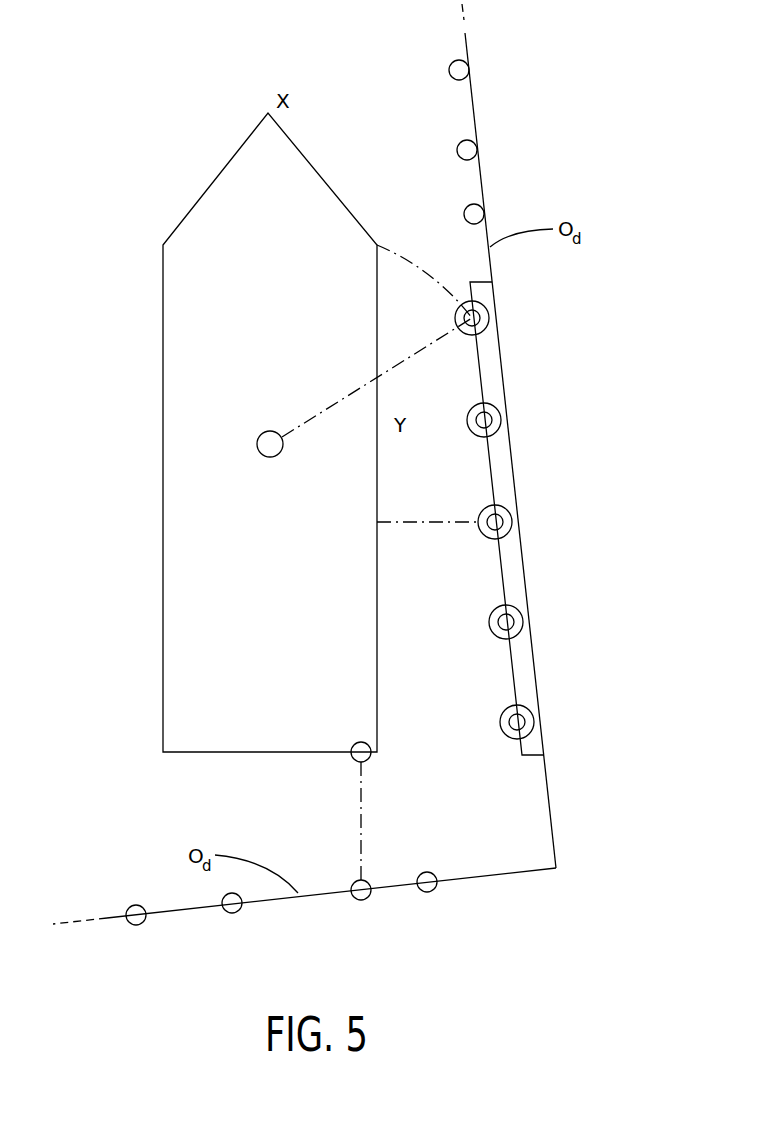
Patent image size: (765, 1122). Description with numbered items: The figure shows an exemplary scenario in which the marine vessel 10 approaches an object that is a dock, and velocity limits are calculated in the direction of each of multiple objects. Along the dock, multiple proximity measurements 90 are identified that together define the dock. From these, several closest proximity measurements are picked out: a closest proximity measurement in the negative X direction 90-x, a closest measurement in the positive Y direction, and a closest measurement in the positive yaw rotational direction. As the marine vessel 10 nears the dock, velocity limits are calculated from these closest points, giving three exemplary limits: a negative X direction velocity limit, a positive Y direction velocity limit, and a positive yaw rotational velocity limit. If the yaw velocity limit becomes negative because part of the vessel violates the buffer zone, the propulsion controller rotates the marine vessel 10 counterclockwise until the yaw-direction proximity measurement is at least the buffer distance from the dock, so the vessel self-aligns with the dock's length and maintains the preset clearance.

The marine vessel 10 is at (322, 177).
The proximity measurements 90 is at (462, 142).
The closest proximity measurement in the negative X direction 90-x is at (365, 895).